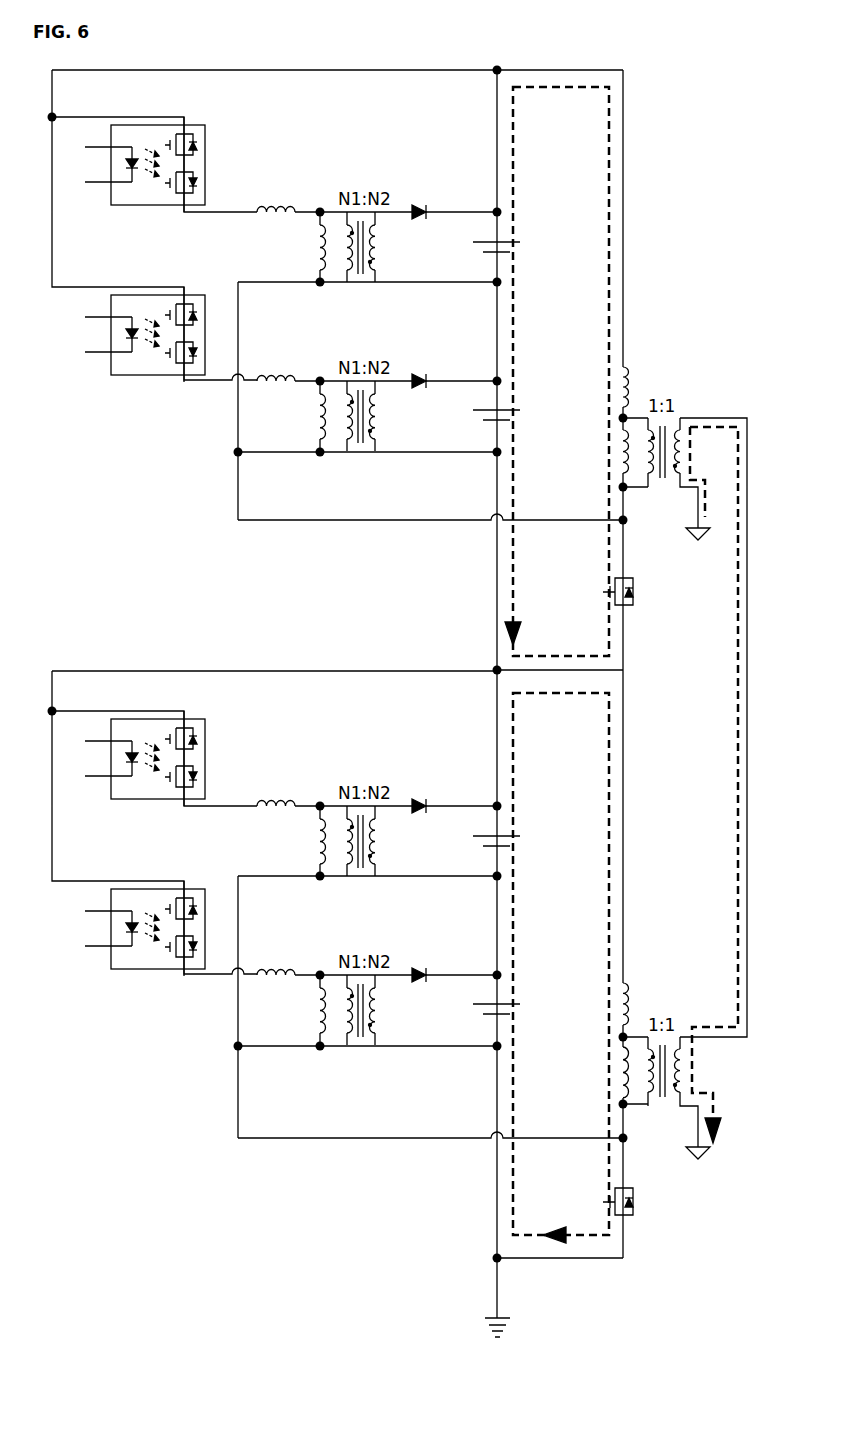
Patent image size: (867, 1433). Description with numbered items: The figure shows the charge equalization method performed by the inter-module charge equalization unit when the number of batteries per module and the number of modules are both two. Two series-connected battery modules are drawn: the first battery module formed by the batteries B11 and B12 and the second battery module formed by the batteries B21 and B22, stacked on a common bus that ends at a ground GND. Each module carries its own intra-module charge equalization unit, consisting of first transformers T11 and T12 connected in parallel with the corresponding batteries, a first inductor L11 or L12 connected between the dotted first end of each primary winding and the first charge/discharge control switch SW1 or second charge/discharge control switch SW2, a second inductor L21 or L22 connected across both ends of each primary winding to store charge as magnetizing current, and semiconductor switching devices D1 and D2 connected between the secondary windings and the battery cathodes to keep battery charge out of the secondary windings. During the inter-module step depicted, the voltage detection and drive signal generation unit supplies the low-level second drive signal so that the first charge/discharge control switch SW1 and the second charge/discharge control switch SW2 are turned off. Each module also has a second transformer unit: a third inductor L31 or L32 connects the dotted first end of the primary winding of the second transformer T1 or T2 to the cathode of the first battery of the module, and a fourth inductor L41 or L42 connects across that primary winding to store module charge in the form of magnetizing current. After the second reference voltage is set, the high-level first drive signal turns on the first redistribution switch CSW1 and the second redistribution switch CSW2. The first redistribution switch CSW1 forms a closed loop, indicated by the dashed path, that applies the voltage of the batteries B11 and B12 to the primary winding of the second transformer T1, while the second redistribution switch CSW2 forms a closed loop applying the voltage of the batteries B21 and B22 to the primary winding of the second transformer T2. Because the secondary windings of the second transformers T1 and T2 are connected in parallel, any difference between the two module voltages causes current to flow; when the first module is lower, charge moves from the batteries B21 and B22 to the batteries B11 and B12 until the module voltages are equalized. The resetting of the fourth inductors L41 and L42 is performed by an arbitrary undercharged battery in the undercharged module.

The first charge/discharge control switch SW1 is at (145, 475).
The second charge/discharge control switch SW2 is at (145, 644).
The first inductor L11 is at (276, 495).
The first inductor L12 is at (276, 664).
The second inductor L21 is at (304, 544).
The second inductor L22 is at (304, 713).
The first transformer T11 is at (363, 556).
The first transformer T12 is at (363, 725).
The semiconductor switching device D1 is at (420, 498).
The semiconductor switching device D2 is at (420, 667).
The first battery of first battery module B11 is at (514, 247).
The second battery of first battery module B12 is at (514, 417).
The first battery of second battery module B21 is at (514, 841).
The second battery of second battery module B22 is at (514, 1011).
The third inductor L31 is at (643, 387).
The third inductor L32 is at (643, 1004).
The fourth inductor L41 is at (601, 451).
The fourth inductor L42 is at (601, 1072).
The second transformer T1 is at (679, 479).
The second transformer T2 is at (679, 1098).
The first redistribution switch CSW1 is at (648, 591).
The second redistribution switch CSW2 is at (648, 1201).
The ground GND is at (502, 1337).